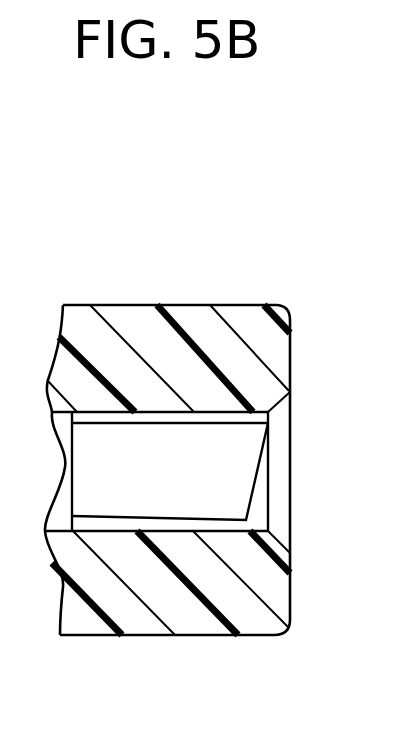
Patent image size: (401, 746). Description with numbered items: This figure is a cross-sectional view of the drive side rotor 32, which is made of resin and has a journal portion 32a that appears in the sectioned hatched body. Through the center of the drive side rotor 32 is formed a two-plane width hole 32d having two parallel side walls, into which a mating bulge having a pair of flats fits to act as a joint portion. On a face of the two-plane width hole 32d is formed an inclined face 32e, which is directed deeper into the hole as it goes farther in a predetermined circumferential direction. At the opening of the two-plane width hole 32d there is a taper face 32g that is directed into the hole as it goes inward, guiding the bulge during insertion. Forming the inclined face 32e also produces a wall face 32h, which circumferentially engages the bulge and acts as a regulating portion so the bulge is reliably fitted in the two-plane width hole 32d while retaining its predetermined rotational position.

The drive side rotor 32 is at (263, 300).
The journal portion 32a is at (138, 326).
The taper face 32g is at (283, 414).
The wall face 32h is at (253, 449).
The inclined face 32e is at (257, 480).
The two-plane width hole 32d is at (222, 502).